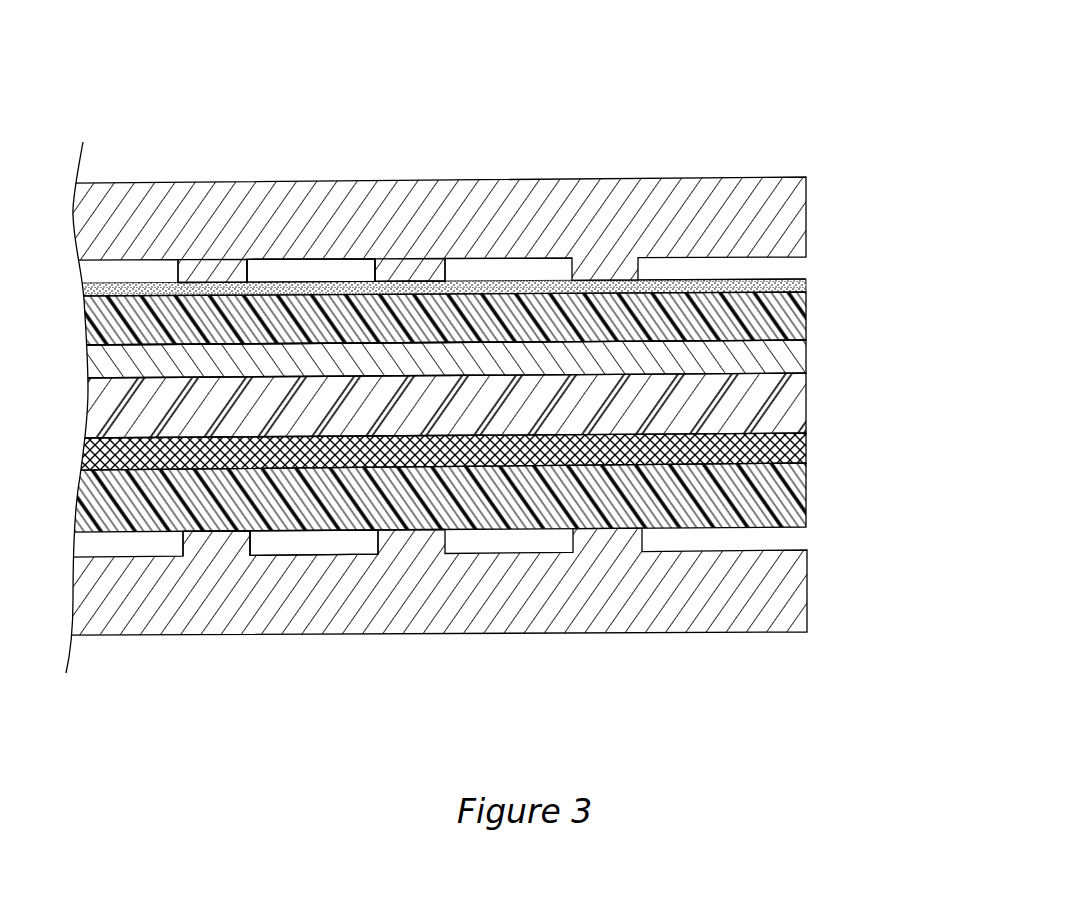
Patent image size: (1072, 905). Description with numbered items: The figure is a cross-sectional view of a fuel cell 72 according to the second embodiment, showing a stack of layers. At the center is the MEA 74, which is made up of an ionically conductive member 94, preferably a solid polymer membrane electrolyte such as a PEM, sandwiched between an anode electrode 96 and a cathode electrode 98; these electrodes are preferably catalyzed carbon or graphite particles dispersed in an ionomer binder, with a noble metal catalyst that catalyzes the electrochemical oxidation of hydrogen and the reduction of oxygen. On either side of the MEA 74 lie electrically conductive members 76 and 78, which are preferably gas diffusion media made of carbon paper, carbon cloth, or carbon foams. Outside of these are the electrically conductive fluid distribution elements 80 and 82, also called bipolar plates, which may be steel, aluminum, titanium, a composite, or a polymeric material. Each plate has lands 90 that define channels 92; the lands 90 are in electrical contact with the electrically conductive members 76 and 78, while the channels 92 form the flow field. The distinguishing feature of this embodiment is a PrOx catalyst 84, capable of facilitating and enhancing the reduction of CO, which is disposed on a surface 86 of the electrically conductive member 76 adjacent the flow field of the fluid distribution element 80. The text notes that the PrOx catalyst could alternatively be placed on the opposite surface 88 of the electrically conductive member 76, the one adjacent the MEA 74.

The fuel cell 72 is at (887, 60).
The MEA 74 is at (527, 405).
The electrically conductive member 76 is at (808, 301).
The electrically conductive member 78 is at (800, 497).
The electrically conductive fluid distribution element 80 is at (593, 184).
The electrically conductive fluid distribution element 82 is at (523, 620).
The PrOx catalyst 84 is at (807, 279).
The surface 86 is at (698, 284).
The surface 88 is at (788, 336).
The lands 90 is at (428, 290).
The channels 92 is at (327, 270).
The ionically conductive member 94 is at (792, 407).
The anode electrode 96 is at (800, 362).
The cathode electrode 98 is at (800, 450).